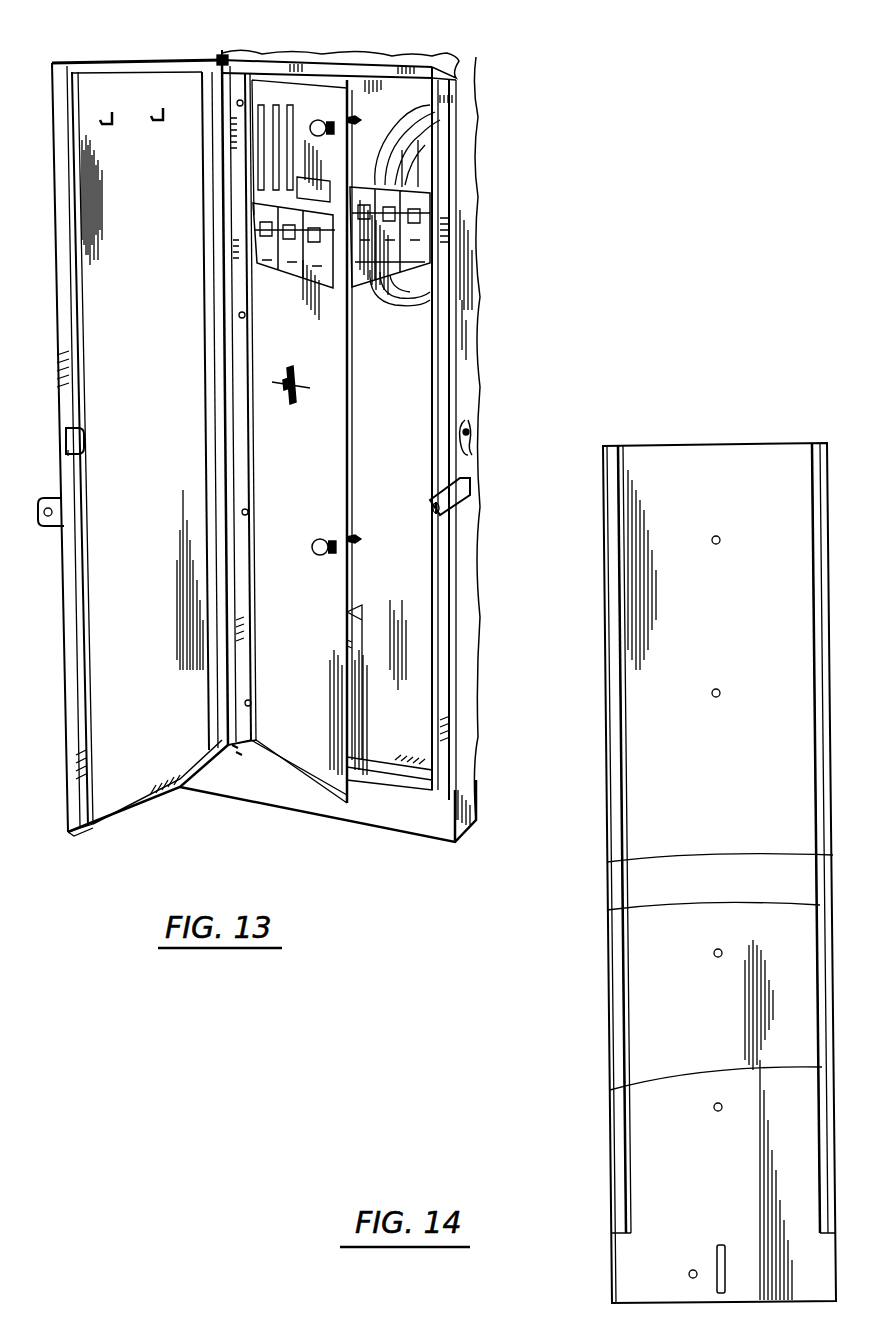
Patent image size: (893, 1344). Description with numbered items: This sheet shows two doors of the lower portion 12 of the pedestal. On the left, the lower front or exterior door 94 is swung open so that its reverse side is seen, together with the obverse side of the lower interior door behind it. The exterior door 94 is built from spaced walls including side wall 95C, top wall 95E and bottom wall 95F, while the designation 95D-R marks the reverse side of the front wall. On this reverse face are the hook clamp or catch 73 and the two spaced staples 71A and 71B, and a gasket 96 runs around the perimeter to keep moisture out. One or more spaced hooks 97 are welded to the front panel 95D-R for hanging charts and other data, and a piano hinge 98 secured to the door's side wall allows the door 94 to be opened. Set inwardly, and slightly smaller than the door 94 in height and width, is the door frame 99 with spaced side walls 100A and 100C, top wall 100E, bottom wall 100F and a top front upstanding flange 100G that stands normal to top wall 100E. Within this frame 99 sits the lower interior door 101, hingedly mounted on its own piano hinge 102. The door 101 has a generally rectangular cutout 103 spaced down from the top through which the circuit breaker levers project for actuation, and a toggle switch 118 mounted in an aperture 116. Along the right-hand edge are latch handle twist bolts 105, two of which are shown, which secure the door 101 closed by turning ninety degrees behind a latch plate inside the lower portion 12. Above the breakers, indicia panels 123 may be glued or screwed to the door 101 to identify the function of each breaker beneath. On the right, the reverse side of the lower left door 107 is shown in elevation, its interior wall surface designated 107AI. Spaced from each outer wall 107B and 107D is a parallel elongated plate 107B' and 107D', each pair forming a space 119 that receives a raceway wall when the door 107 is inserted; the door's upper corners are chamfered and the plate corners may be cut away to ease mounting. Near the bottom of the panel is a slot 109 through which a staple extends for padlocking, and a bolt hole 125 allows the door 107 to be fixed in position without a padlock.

In FIG. 13, the lower portion 12 is at (508, 348).
In FIG. 13, the staple 71A is at (58, 528).
In FIG. 13, the staple 71B is at (450, 508).
In FIG. 13, the hook clamp or catch 73 is at (72, 440).
In FIG. 13, the lower front or exterior door 94 is at (72, 838).
In FIG. 13, the side wall 95C is at (76, 723).
In FIG. 13, the reverse side of front wall 95D-R is at (184, 733).
In FIG. 13, the top wall 95E is at (120, 64).
In FIG. 13, the bottom wall 95F is at (100, 822).
In FIG. 13, the gasket 96 is at (222, 56).
In FIG. 13, the hooks 97 is at (160, 108).
In FIG. 13, the piano hinge 98 is at (233, 757).
In FIG. 13, the door frame 99 is at (420, 792).
In FIG. 13, the side wall 100A is at (252, 760).
In FIG. 13, the side wall 100C is at (435, 650).
In FIG. 13, the top wall 100E is at (447, 58).
In FIG. 13, the bottom wall 100F is at (430, 770).
In FIG. 13, the top front upstanding flange 100G is at (362, 64).
In FIG. 13, the lower inner or interior door 101 is at (338, 805).
In FIG. 13, the piano hinge 102 is at (251, 95).
In FIG. 13, the rectangular cutout 103 is at (352, 191).
In FIG. 13, the latch handle twist bolts 105 is at (333, 122).
In FIG. 14, the lower left door 107 is at (708, 440).
In FIG. 14, the interior surface of wall 107AI is at (748, 774).
In FIG. 14, the outer wall 107B is at (684, 863).
In FIG. 14, the elongated plate 107B' is at (670, 911).
In FIG. 14, the outer wall 107D is at (576, 959).
In FIG. 14, the elongated plate 107D' is at (571, 1021).
In FIG. 14, the slot 109 is at (716, 1250).
In FIG. 13, the aperture 116 is at (280, 392).
In FIG. 13, the toggle switch 118 is at (300, 385).
In FIG. 14, the space 119 is at (822, 1067).
In FIG. 13, the indicia panels 123 is at (360, 152).
In FIG. 14, the bolt hole 125 is at (568, 1254).